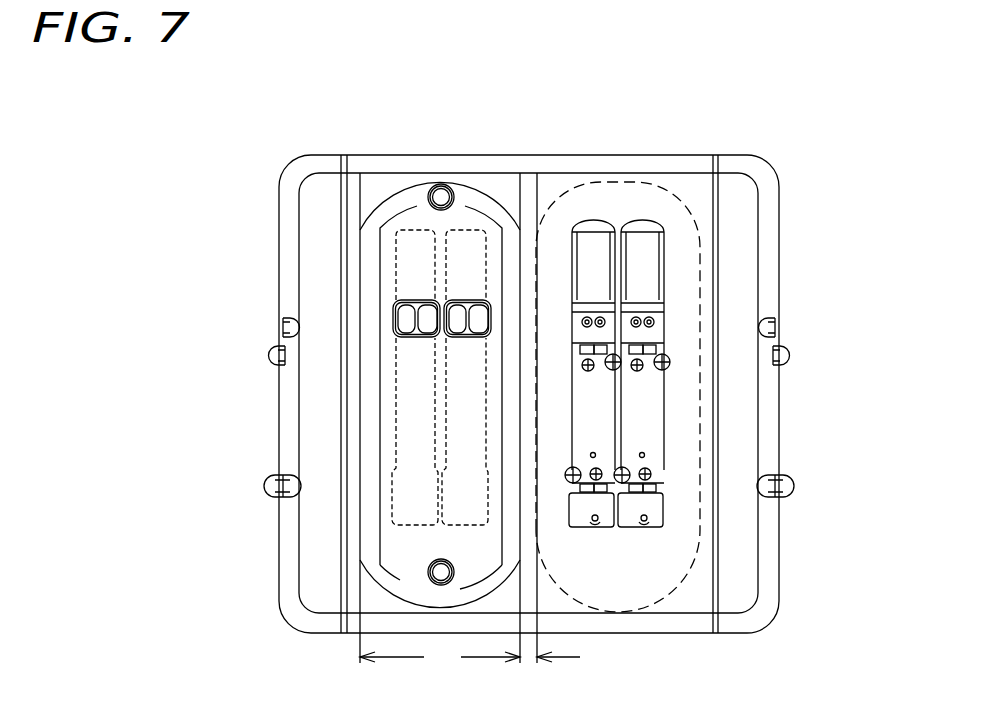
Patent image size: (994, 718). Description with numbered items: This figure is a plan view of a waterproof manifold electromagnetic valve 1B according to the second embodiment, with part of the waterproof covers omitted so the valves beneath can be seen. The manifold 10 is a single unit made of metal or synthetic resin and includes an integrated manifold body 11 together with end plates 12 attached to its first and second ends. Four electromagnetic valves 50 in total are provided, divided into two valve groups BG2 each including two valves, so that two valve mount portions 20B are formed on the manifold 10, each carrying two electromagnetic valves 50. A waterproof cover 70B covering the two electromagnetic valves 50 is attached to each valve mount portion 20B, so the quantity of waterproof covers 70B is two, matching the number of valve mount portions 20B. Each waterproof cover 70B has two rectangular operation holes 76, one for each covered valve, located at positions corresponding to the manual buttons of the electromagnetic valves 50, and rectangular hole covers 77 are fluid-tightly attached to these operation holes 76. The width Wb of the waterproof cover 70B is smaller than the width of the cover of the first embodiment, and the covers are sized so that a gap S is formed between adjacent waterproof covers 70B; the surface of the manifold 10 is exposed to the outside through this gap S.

The manifold electromagnetic valve 1B is at (530, 368).
The manifold 10 is at (504, 128).
The manifold body 11 is at (450, 168).
The end plate 12 is at (291, 235).
The waterproof cover 70B is at (378, 186).
The valve mount portion 20B is at (356, 440).
The valve group BG2 is at (356, 537).
The operation hole 76 is at (420, 302).
The hole cover 77 is at (417, 338).
The electromagnetic valve 50 is at (650, 250).
The width of waterproof cover Wb is at (440, 659).
The gap S is at (549, 677).